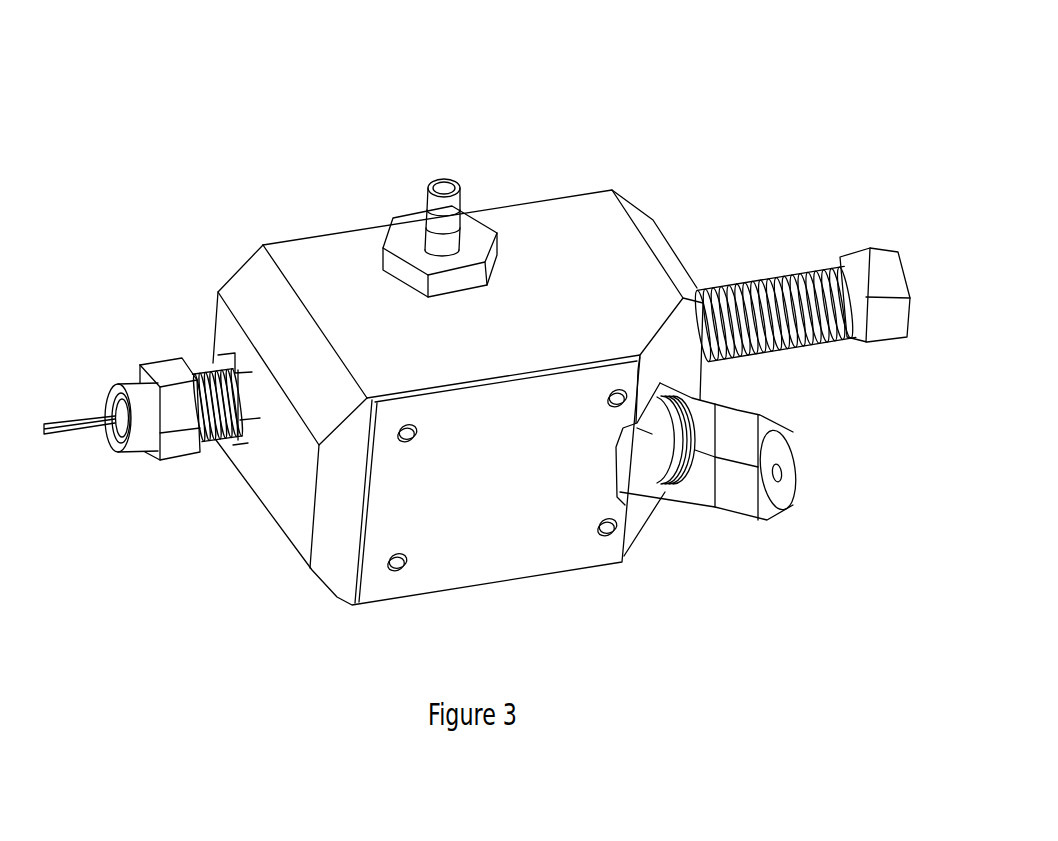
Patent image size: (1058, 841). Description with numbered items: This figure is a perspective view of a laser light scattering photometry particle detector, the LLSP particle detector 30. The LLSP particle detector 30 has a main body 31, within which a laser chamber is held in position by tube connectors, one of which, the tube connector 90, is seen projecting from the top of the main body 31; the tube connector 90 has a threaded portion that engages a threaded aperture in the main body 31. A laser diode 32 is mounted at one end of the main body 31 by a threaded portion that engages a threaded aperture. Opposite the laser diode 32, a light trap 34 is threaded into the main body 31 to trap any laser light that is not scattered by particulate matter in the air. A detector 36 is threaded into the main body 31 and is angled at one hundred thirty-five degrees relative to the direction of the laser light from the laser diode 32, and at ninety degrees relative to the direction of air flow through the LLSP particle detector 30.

The LLSP particle detector 30 is at (647, 107).
The main body 31 is at (552, 223).
The laser diode 32 is at (173, 468).
The light trap 34 is at (795, 262).
The detector 36 is at (808, 450).
The tube connector 90 is at (402, 238).